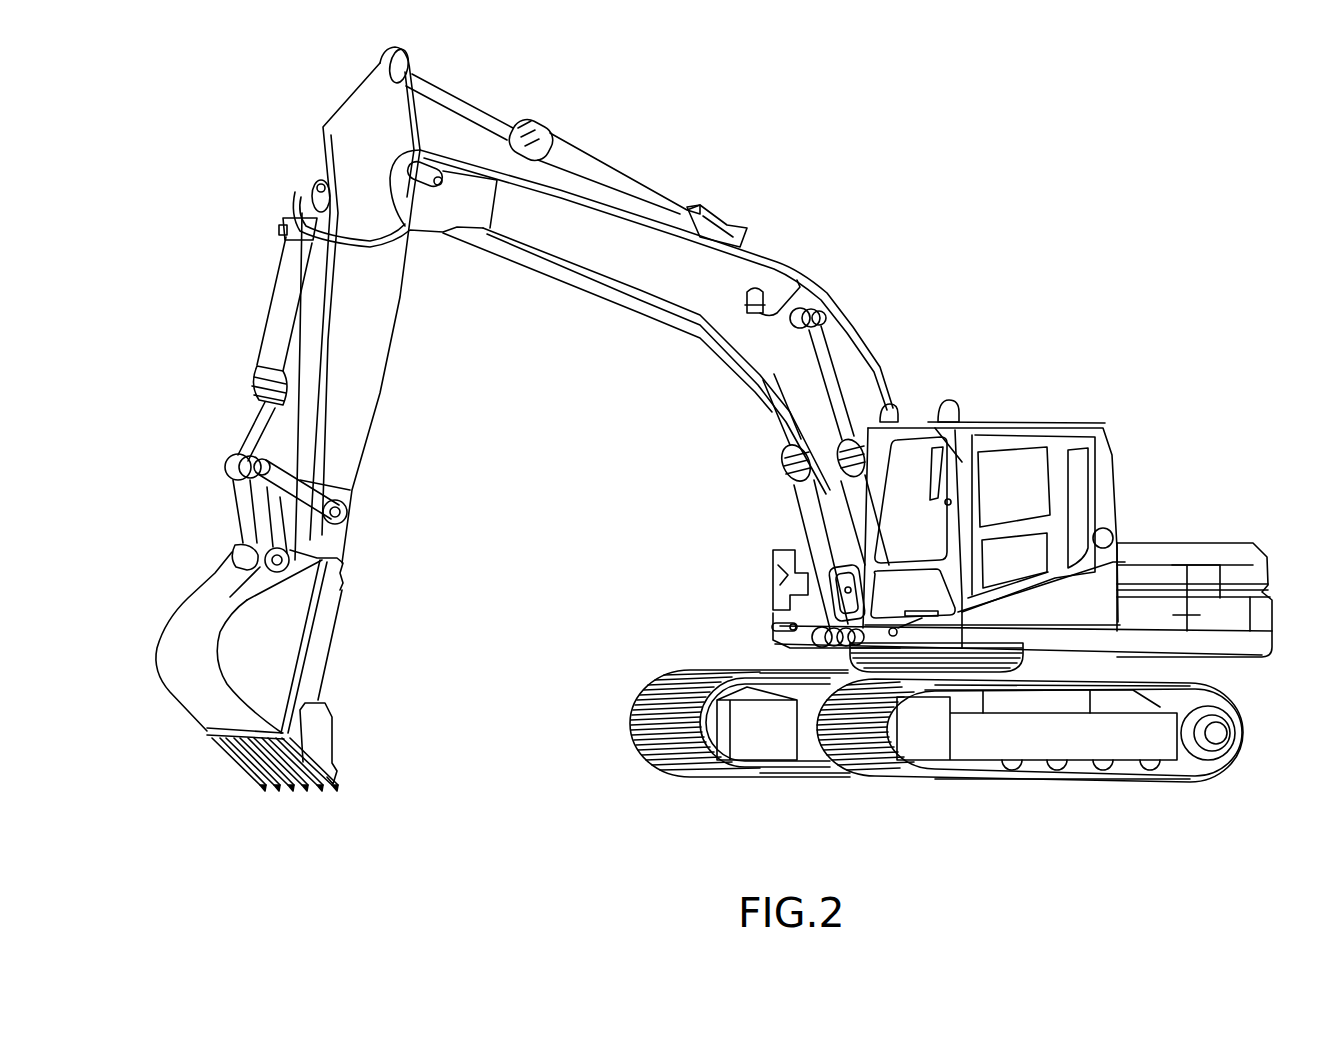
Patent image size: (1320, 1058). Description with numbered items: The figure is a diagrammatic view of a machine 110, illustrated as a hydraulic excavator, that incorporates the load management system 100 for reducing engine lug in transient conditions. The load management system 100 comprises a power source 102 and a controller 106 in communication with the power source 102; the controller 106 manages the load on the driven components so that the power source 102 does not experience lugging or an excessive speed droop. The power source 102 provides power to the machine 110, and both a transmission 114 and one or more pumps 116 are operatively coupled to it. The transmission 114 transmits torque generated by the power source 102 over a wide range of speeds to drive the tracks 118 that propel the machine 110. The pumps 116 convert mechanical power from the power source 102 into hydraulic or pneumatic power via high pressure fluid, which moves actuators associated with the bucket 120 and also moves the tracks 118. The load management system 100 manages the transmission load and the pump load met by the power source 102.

The load management system 100 is at (1126, 528).
The power source 102 is at (1243, 627).
The controller 106 is at (1101, 618).
The machine 110 is at (1035, 209).
The transmission 114 is at (1168, 572).
The pumps 116 is at (1169, 625).
The tracks 118 is at (1127, 783).
The bucket 120 is at (270, 652).